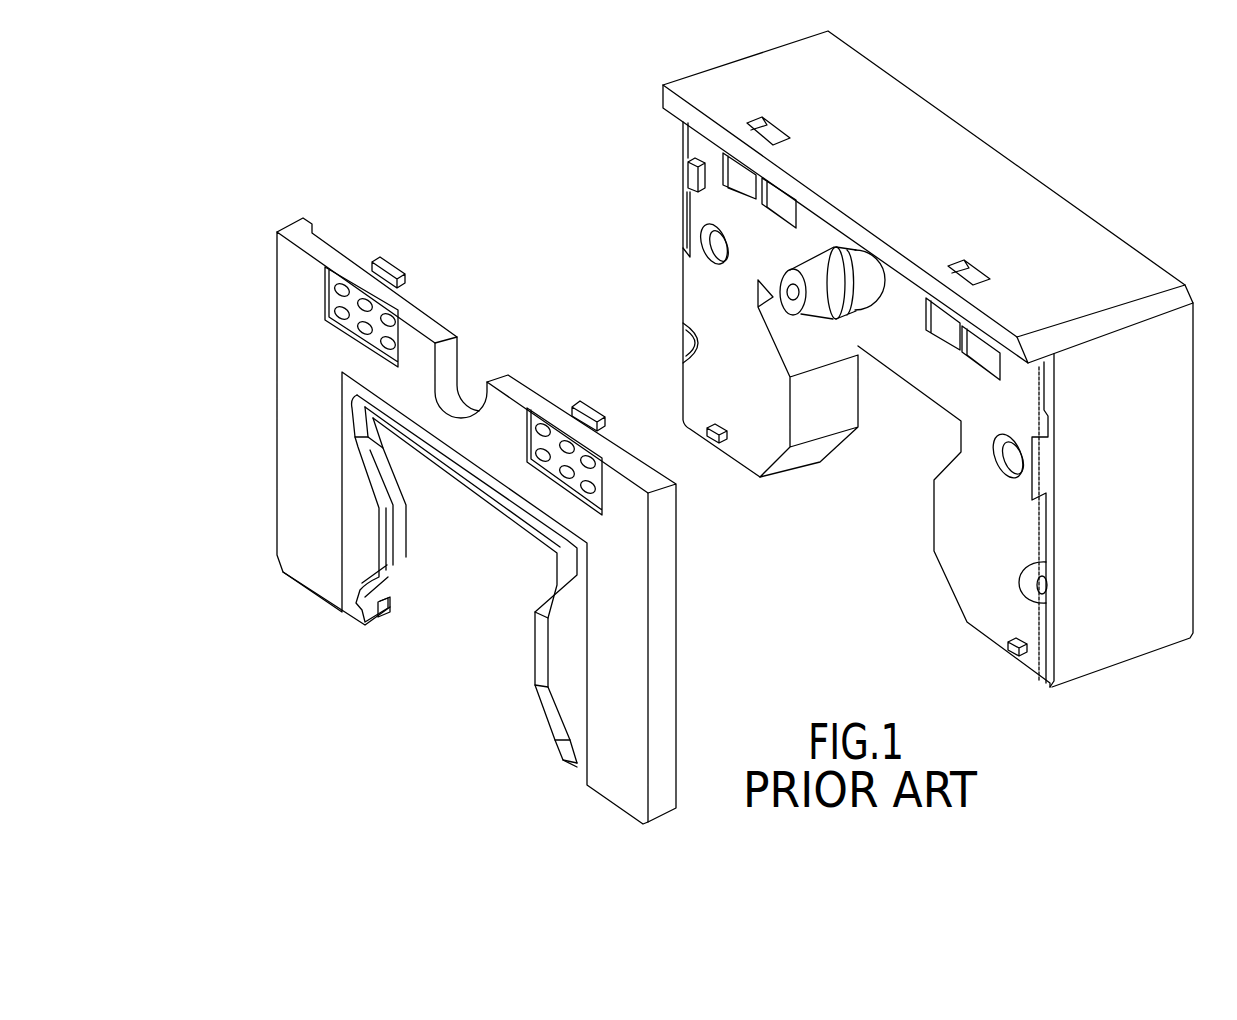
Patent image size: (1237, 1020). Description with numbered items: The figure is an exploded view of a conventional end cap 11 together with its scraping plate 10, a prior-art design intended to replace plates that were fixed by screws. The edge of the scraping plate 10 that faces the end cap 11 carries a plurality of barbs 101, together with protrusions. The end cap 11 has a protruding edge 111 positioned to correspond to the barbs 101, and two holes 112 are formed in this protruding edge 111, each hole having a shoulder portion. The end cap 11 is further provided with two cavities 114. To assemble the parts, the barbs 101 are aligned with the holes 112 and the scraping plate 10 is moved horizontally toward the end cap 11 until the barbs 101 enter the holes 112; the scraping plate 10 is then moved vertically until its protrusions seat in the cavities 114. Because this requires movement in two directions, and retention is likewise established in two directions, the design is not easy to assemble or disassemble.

The scraping plate 10 is at (433, 513).
The barbs 101 is at (404, 283).
The end cap 11 is at (895, 382).
The protruding edge 111 is at (1033, 360).
The holes 112 is at (746, 119).
The cavities 114 is at (714, 447).